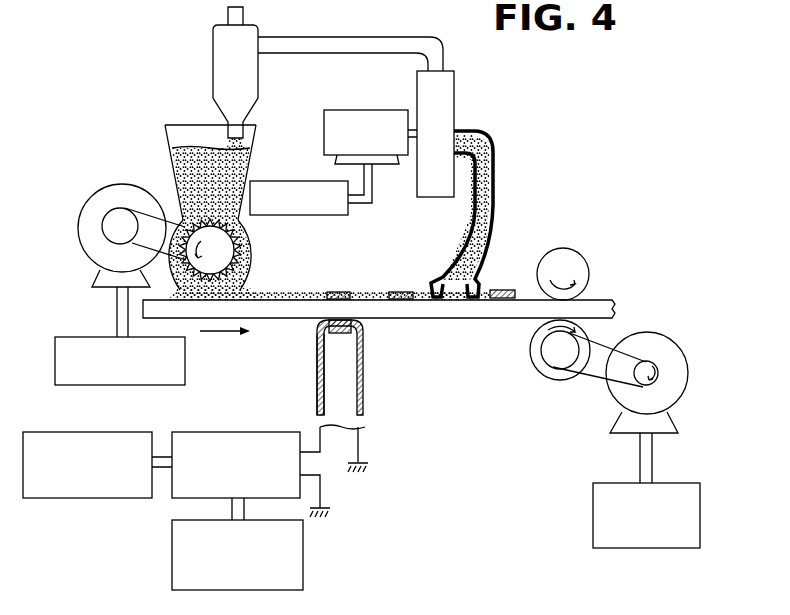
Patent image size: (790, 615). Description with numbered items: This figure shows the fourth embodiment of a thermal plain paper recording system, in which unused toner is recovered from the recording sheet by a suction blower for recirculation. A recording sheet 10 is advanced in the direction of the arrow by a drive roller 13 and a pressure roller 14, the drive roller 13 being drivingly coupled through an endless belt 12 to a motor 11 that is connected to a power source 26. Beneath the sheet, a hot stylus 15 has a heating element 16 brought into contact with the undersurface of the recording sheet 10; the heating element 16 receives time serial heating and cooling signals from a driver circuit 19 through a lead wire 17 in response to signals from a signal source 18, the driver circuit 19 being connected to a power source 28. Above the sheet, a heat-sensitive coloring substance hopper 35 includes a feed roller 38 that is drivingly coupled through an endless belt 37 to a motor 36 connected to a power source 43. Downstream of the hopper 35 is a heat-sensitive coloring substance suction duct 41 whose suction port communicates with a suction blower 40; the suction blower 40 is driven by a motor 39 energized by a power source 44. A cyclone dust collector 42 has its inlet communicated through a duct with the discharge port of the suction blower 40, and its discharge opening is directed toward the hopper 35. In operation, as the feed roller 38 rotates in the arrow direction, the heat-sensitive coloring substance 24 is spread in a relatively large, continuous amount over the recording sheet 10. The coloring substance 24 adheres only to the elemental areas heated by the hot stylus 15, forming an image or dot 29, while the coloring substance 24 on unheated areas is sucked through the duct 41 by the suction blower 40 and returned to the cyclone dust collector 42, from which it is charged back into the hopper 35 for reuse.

The recording sheet 10 is at (473, 312).
The motor 11 is at (664, 332).
The endless belt 12 is at (590, 378).
The drive roller 13 is at (541, 372).
The pressure roller 14 is at (566, 250).
The hot stylus 15 is at (363, 385).
The heating element 16 is at (335, 333).
The lead wire 17 is at (317, 387).
The signal source 18 is at (303, 550).
The driver circuit 19 is at (231, 432).
The heat-sensitive coloring substance 24 is at (236, 180).
The power source 26 is at (593, 503).
The power source 28 is at (78, 490).
The image or dot 29 is at (502, 290).
The heat-sensitive coloring substance hopper 35 is at (254, 143).
The motor 36 is at (106, 190).
The endless belt 37 is at (152, 197).
The feed roller 38 is at (220, 246).
The motor 39 is at (342, 110).
The suction blower 40 is at (455, 88).
The heat-sensitive coloring substance suction duct 41 is at (462, 252).
The cyclone dust collector 42 is at (218, 60).
The power source 43 is at (185, 360).
The power source 44 is at (328, 217).